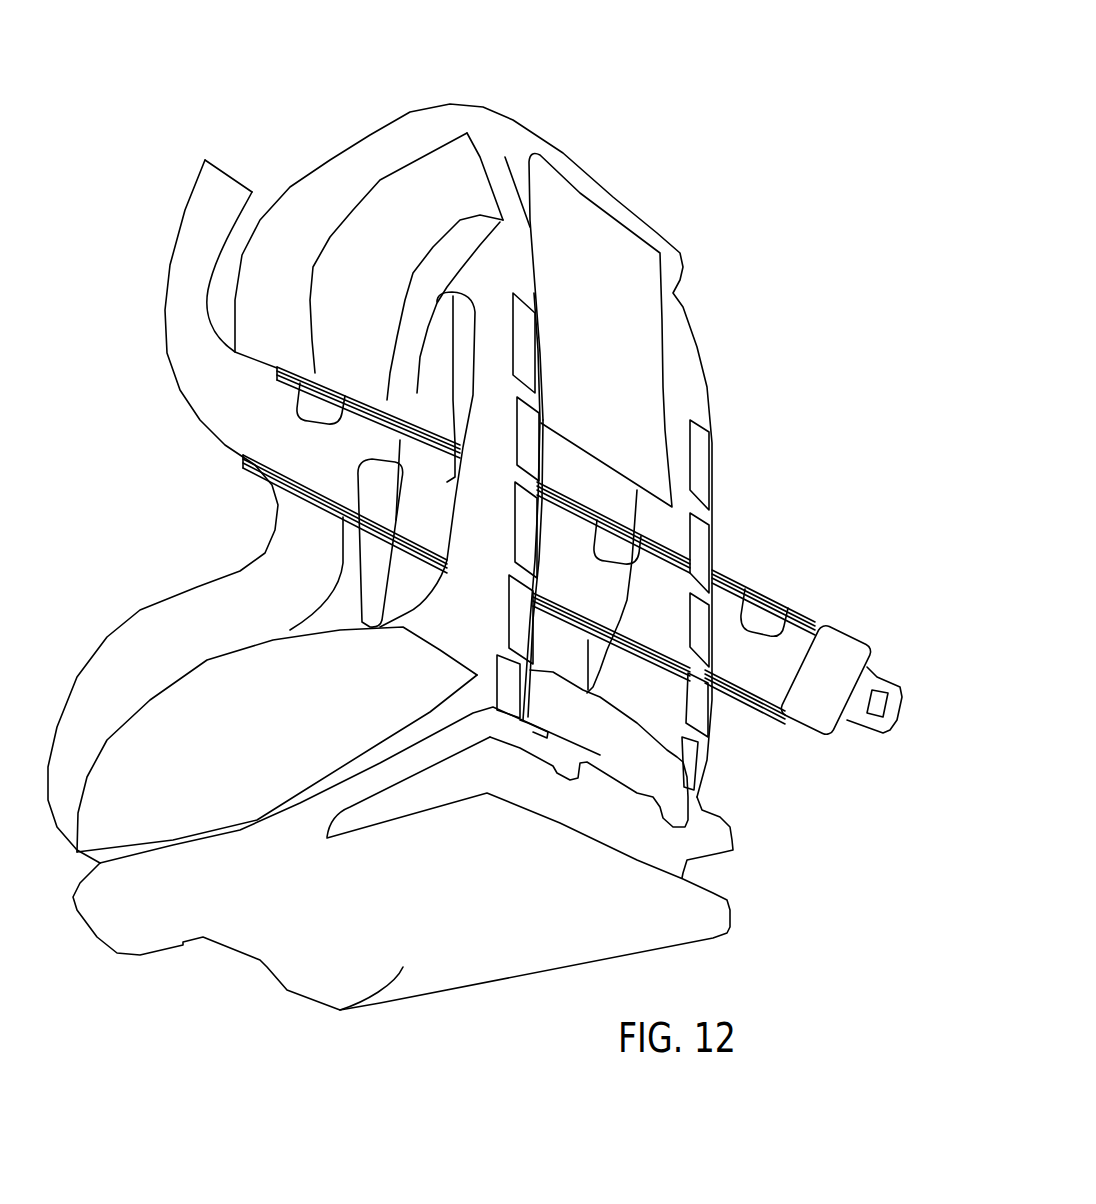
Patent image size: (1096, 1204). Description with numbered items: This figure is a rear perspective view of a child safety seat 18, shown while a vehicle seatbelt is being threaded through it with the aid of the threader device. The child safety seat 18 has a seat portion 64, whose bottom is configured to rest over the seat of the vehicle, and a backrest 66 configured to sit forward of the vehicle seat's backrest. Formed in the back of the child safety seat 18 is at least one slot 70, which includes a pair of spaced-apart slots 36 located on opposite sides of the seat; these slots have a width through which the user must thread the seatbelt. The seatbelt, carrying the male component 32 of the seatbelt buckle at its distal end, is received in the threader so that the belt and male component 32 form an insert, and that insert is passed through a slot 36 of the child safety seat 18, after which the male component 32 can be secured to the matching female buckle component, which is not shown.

The child safety seat 18 is at (640, 157).
The male component of the seatbelt buckle 32 is at (828, 633).
The slot 36 is at (440, 380).
The seat portion 64 is at (335, 1009).
The backrest 66 is at (613, 397).
The slot 70 is at (363, 558).